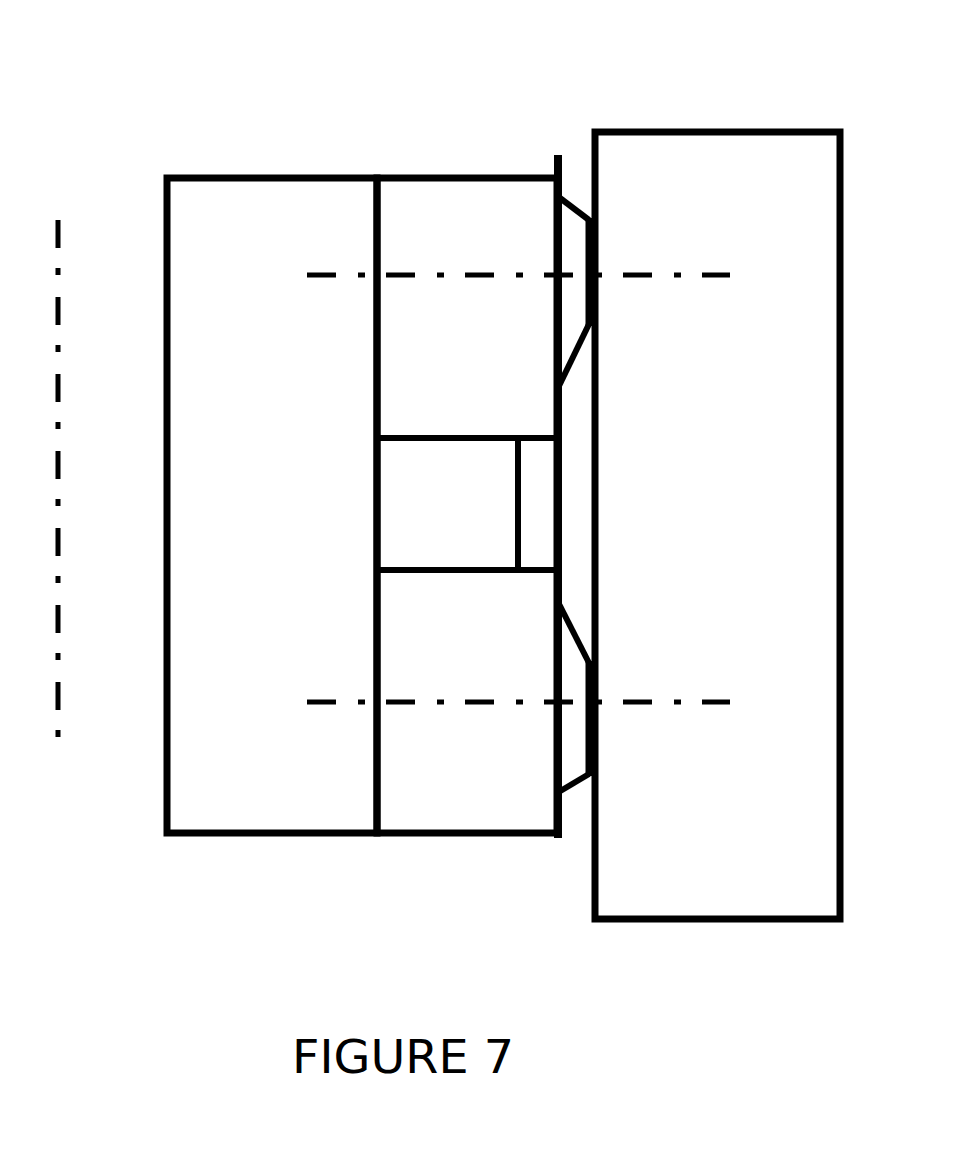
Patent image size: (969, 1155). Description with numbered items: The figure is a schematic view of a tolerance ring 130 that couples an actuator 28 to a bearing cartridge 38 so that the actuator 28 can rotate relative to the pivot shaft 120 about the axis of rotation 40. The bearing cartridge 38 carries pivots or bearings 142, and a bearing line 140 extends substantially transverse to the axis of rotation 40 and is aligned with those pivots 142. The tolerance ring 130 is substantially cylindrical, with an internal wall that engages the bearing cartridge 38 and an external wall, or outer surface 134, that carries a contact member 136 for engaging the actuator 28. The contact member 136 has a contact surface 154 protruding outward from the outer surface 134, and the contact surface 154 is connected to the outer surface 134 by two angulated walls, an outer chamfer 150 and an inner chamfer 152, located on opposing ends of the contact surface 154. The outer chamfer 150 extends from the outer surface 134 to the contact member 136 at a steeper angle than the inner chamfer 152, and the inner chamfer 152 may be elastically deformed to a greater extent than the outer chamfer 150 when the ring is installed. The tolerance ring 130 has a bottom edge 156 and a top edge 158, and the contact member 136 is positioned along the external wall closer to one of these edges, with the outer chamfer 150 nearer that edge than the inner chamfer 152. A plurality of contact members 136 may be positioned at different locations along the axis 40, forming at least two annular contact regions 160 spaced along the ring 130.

The actuator 28 is at (768, 496).
The bearing cartridge 38 is at (433, 853).
The axis of rotation 40 is at (60, 221).
The pivot shaft 120 is at (288, 496).
The tolerance ring 130 is at (570, 518).
The outer surface 134 is at (563, 463).
The contact member 136 is at (587, 297).
The bearing line 140 is at (710, 278).
The pivots 142 is at (450, 401).
The outer chamfer 150 is at (567, 203).
The inner chamfer 152 is at (580, 350).
The contact surface 154 is at (610, 732).
The bottom edge 156 is at (562, 843).
The top edge 158 is at (553, 157).
The annular contact regions 160 is at (572, 242).